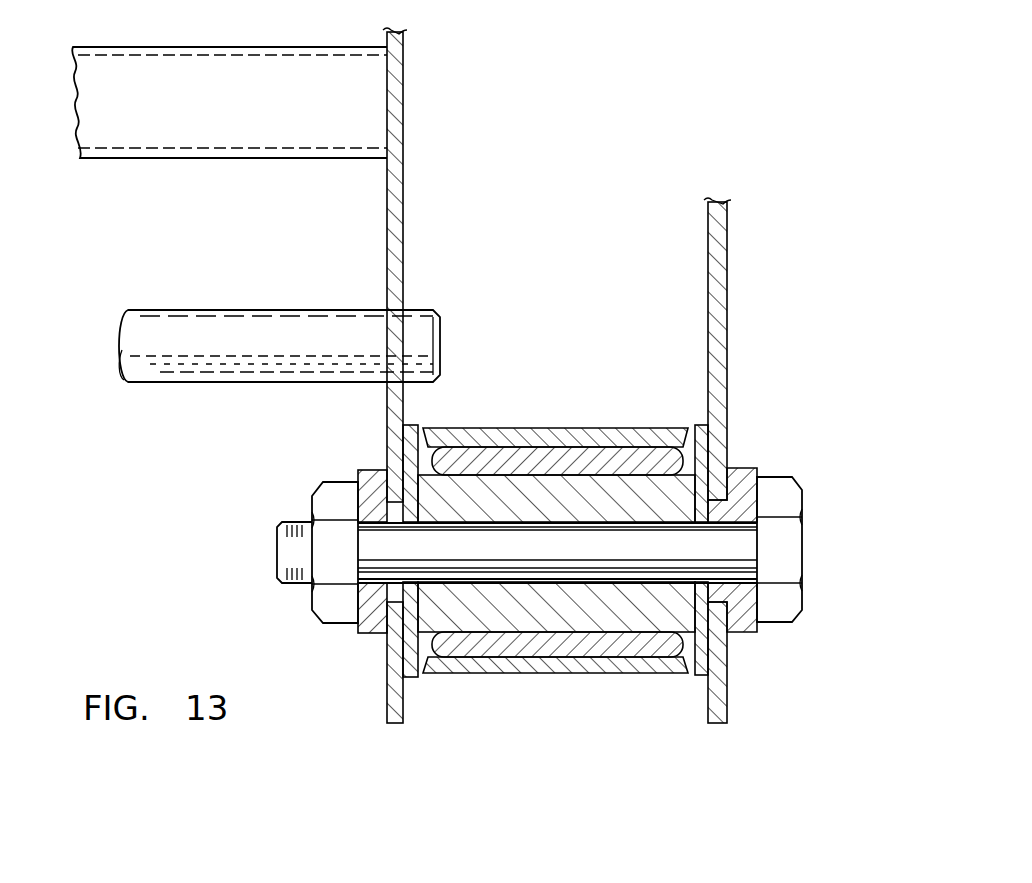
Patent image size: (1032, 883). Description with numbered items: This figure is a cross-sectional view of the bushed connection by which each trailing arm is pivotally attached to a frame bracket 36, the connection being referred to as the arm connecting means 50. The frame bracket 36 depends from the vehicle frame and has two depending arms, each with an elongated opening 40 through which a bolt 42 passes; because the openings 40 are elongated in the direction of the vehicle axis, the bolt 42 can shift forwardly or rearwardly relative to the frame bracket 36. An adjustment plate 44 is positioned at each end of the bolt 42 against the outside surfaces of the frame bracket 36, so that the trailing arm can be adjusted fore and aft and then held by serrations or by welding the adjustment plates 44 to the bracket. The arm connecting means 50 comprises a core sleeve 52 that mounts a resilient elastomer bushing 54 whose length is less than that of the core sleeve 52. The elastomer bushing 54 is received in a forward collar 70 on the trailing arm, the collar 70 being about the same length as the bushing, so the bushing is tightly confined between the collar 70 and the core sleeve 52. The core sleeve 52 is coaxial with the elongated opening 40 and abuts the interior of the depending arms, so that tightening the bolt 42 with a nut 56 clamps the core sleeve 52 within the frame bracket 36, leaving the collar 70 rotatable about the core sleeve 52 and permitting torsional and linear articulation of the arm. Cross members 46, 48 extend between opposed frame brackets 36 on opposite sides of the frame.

The frame bracket 36 is at (727, 335).
The elongated opening 40 is at (733, 630).
The bolt 42 is at (663, 537).
The adjustment plate 44 is at (725, 498).
The cross member 46 is at (223, 133).
The cross member 48 is at (202, 327).
The arm connecting means 50 is at (798, 716).
The core sleeve 52 is at (563, 487).
The resilient elastomer bushing 54 is at (535, 457).
The nut 56 is at (330, 490).
The forward collar 70 is at (480, 435).